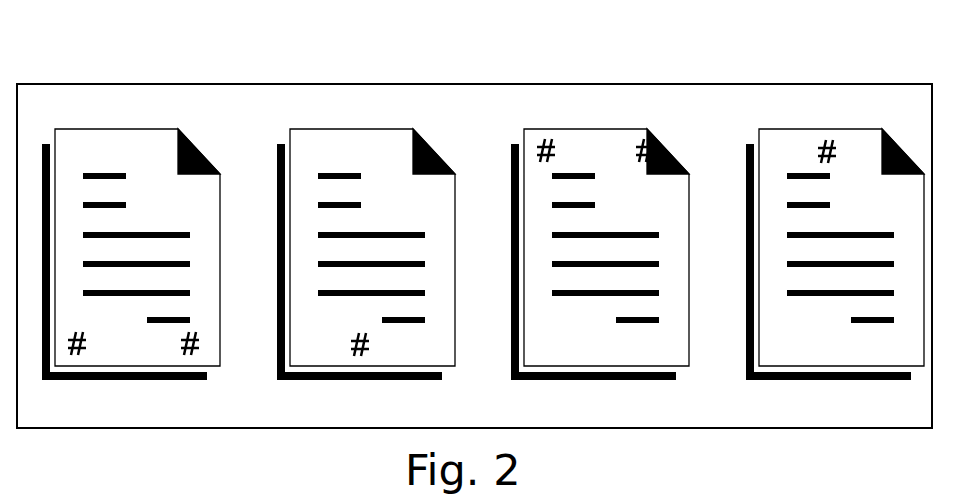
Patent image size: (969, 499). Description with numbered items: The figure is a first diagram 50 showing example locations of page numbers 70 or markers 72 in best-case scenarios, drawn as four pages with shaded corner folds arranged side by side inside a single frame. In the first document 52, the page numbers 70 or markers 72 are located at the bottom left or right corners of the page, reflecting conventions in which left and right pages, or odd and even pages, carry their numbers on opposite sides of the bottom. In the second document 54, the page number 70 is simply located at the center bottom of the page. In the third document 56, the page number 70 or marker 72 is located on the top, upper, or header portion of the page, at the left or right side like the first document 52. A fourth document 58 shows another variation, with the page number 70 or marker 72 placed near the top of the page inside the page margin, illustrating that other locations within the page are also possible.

The first diagram 50 is at (751, 50).
The first document 52 is at (200, 150).
The second document 54 is at (436, 153).
The third document 56 is at (672, 153).
The fourth document 58 is at (850, 134).
The page number 70 is at (483, 255).
The marker 72 is at (87, 343).